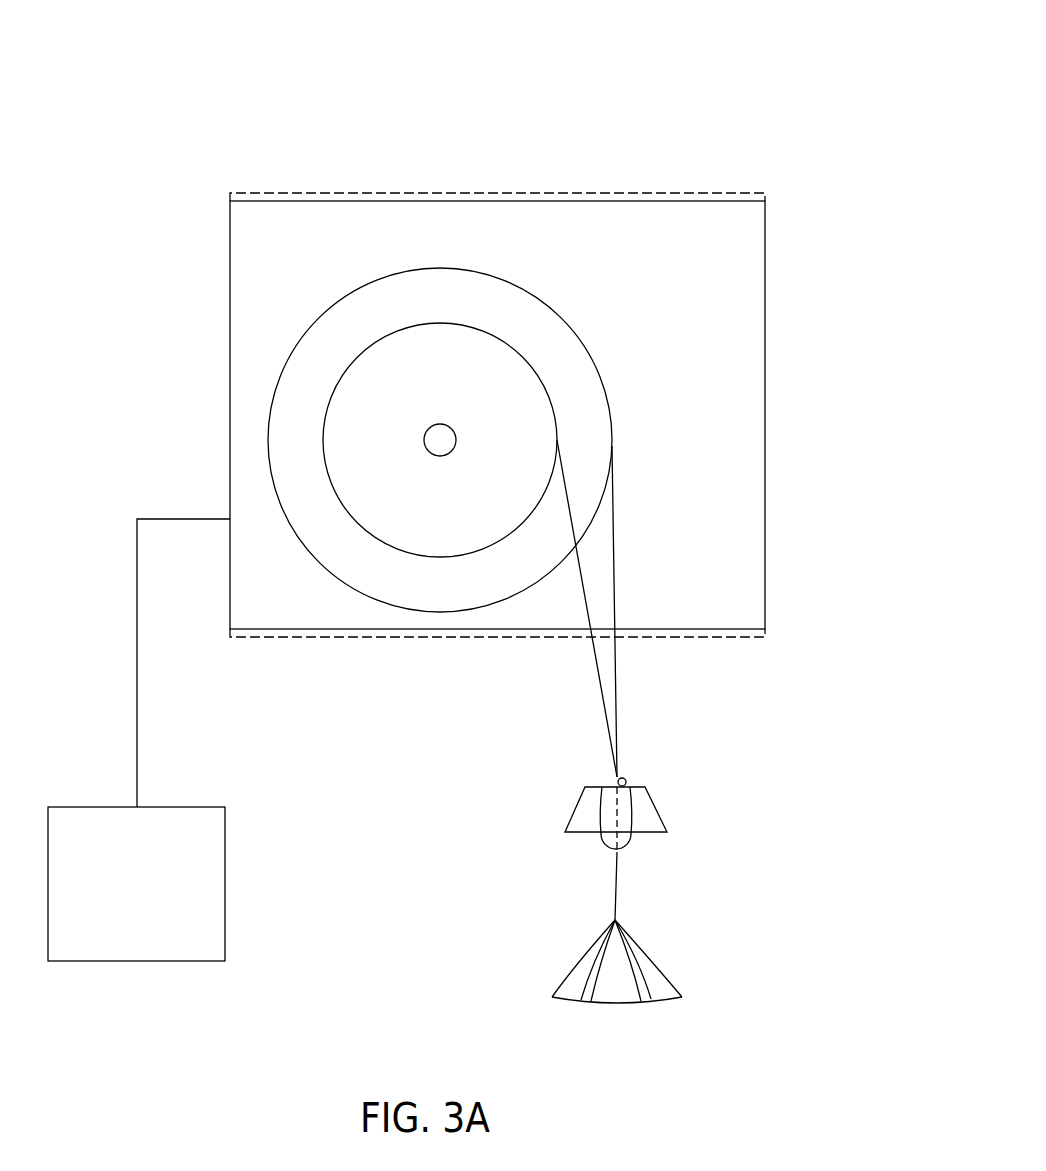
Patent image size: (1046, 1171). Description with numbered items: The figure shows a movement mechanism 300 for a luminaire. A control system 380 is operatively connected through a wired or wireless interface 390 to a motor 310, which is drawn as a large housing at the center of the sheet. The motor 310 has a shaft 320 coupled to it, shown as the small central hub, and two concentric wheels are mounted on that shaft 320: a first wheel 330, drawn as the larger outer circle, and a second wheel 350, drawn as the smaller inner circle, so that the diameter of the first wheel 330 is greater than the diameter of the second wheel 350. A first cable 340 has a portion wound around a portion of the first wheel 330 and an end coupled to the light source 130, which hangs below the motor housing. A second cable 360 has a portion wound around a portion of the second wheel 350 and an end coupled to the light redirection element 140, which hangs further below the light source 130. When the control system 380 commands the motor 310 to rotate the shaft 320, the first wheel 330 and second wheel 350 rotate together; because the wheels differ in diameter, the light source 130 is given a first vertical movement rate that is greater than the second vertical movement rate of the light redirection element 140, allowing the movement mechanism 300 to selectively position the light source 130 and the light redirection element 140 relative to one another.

The movement mechanism 300 is at (776, 88).
The motor 310 is at (765, 350).
The shaft 320 is at (439, 423).
The first wheel 330 is at (529, 293).
The first cable 340 is at (615, 705).
The second wheel 350 is at (367, 503).
The second cable 360 is at (597, 683).
The control system 380 is at (225, 880).
The wired or wireless interface 390 is at (136, 662).
The light source 130 is at (655, 808).
The light redirection element 140 is at (645, 960).